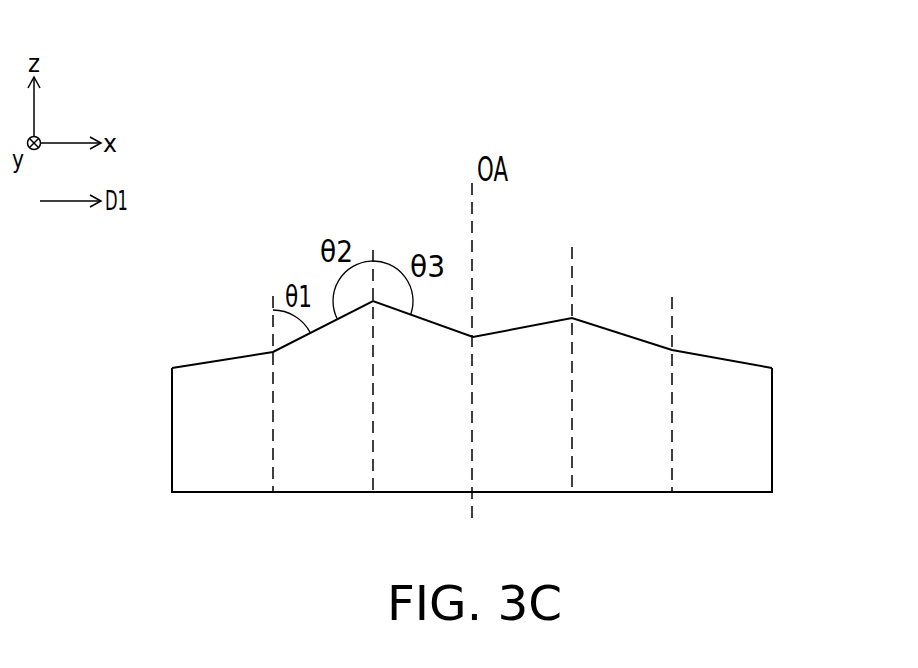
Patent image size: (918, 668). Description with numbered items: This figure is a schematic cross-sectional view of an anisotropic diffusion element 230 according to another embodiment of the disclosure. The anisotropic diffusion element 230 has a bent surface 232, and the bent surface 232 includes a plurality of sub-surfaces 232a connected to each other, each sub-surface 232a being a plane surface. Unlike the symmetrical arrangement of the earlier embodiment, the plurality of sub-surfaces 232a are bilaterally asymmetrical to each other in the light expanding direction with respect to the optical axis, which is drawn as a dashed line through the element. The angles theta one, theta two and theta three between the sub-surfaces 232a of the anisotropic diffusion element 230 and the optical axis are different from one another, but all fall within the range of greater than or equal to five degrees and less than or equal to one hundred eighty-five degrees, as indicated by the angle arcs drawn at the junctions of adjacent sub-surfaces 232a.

The anisotropic diffusion element 230 is at (484, 332).
The bent surface 232 is at (447, 318).
The sub-surface 232a is at (207, 360).